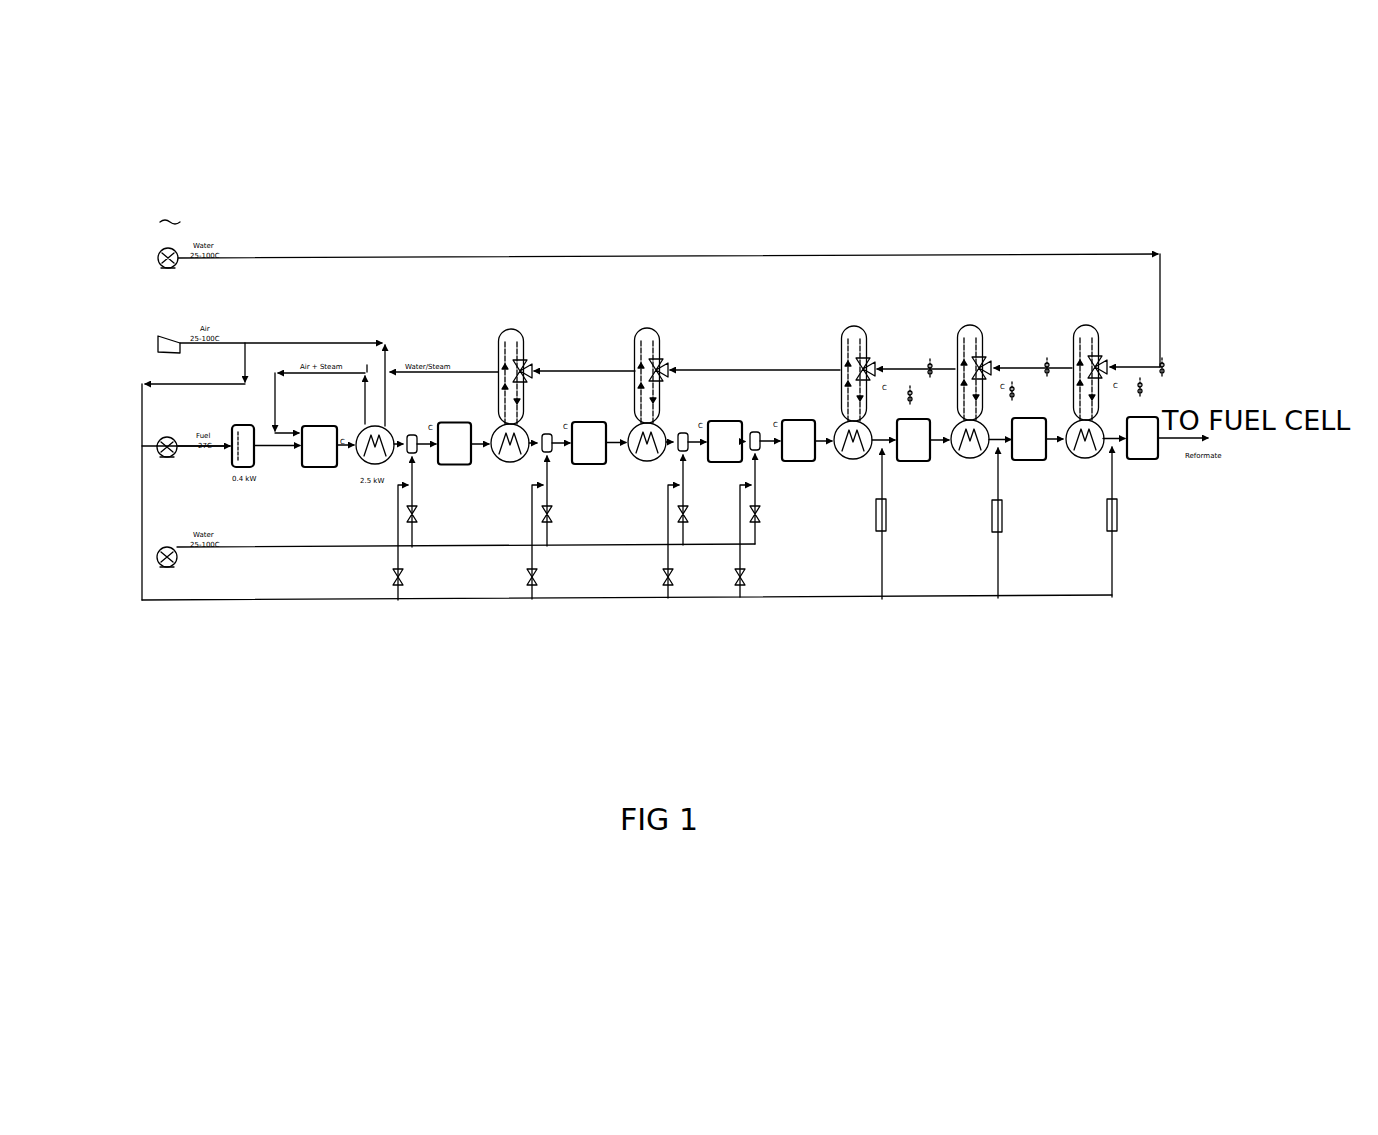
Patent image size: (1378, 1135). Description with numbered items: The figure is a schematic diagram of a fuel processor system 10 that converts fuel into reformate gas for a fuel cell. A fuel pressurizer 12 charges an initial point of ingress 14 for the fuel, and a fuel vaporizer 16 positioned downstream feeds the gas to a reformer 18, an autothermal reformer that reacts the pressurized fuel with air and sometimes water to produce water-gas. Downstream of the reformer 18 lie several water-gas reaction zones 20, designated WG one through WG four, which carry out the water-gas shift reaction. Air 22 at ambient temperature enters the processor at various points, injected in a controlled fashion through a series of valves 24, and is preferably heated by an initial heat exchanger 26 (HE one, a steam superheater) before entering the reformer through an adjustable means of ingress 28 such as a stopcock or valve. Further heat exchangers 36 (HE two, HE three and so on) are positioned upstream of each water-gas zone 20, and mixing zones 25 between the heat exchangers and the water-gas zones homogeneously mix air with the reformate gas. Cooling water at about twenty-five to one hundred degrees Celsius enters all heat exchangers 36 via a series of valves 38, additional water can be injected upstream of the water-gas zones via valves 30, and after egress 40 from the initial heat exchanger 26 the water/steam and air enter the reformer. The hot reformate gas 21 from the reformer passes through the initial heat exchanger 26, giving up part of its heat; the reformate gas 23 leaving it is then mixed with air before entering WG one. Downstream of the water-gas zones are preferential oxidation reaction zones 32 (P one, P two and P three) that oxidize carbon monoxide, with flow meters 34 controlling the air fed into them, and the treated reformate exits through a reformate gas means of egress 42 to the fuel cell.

The fuel processor system 10 is at (847, 627).
The fuel pressurizer 12 is at (158, 447).
The initial point of ingress 14 is at (198, 452).
The fuel vaporizer 16 is at (242, 421).
The reformer 18 is at (313, 468).
The water-gas reaction zones 20 is at (452, 420).
The hot reformate gas 21 is at (352, 443).
The air 22 is at (165, 330).
The reformate gas 23 is at (398, 436).
The valves 24 is at (424, 580).
The mixing zones 25 is at (415, 454).
The initial heat exchanger 26 is at (362, 467).
The adjustable means of ingress 28 is at (297, 432).
The valves 30 is at (405, 520).
The reaction zones 32 is at (911, 416).
The flow meters 34 is at (1006, 534).
The heat exchangers 36 is at (513, 330).
The valves 38 is at (525, 364).
The egress 40 is at (362, 424).
The reformate gas means of egress 42 is at (1173, 444).